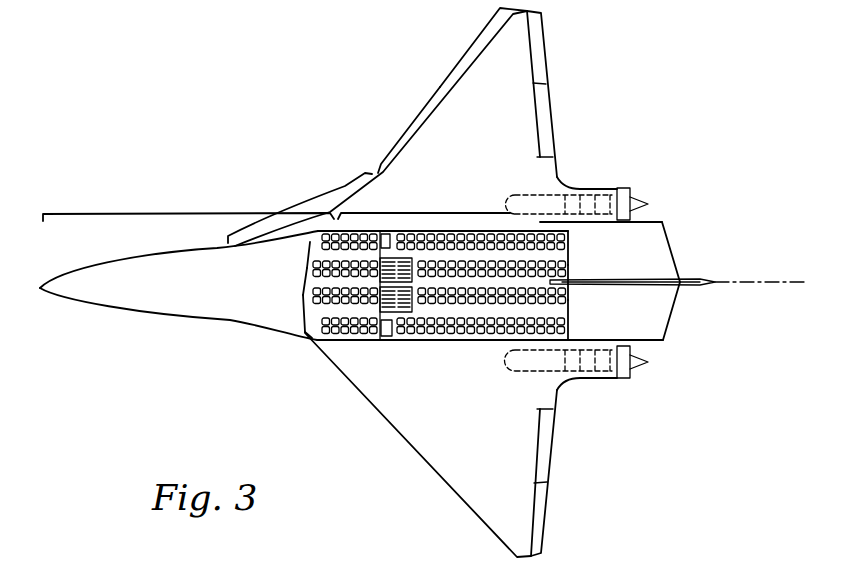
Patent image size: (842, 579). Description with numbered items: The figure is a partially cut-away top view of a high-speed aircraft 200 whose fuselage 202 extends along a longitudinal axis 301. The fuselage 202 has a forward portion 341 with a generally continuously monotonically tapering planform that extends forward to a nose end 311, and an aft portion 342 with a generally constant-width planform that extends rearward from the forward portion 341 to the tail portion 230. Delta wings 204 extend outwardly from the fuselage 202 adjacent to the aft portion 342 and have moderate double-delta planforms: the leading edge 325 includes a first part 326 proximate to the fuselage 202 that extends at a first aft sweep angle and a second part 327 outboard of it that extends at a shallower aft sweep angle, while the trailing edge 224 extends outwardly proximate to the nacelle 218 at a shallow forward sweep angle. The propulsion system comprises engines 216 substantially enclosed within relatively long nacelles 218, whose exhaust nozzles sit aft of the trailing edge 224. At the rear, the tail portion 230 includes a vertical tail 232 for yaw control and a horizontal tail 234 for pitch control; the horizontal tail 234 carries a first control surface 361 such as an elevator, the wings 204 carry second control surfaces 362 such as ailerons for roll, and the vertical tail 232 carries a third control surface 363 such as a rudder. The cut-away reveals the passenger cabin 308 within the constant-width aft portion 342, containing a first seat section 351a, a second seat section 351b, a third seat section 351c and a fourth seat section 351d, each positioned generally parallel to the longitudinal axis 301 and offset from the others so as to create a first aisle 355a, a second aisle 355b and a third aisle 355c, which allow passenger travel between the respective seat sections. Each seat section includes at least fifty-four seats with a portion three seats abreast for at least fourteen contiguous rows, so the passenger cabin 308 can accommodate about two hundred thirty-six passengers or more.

The aircraft 200 is at (203, 48).
The fuselage 202 is at (75, 305).
The delta wings 204 is at (503, 60).
The engines 216 is at (591, 188).
The nacelles 218 is at (620, 200).
The trailing edge 224 is at (543, 46).
The tail portion 230 is at (672, 207).
The vertical tail 232 is at (616, 280).
The horizontal tail 234 is at (677, 353).
The longitudinal axis 301 is at (791, 281).
The passenger cabin 308 is at (420, 352).
The nose end 311 is at (40, 305).
The leading edge 325 is at (462, 70).
The first part 326 is at (297, 200).
The second part 327 is at (439, 76).
The forward portion 341 is at (187, 213).
The aft portion 342 is at (476, 212).
The first seat section 351a is at (292, 270).
The second seat section 351b is at (300, 250).
The third seat section 351c is at (292, 306).
The fourth seat section 351d is at (303, 337).
The first aisle 355a is at (562, 252).
The second aisle 355b is at (550, 282).
The third aisle 355c is at (568, 313).
The first control surface 361 is at (673, 313).
The second control surfaces 362 is at (547, 75).
The third control surface 363 is at (652, 280).